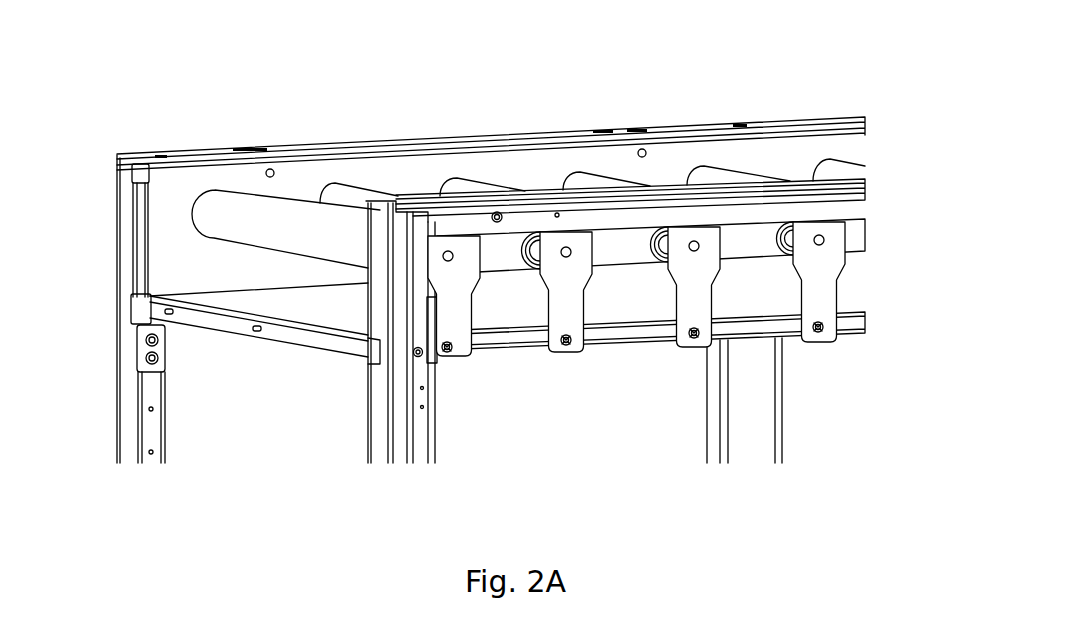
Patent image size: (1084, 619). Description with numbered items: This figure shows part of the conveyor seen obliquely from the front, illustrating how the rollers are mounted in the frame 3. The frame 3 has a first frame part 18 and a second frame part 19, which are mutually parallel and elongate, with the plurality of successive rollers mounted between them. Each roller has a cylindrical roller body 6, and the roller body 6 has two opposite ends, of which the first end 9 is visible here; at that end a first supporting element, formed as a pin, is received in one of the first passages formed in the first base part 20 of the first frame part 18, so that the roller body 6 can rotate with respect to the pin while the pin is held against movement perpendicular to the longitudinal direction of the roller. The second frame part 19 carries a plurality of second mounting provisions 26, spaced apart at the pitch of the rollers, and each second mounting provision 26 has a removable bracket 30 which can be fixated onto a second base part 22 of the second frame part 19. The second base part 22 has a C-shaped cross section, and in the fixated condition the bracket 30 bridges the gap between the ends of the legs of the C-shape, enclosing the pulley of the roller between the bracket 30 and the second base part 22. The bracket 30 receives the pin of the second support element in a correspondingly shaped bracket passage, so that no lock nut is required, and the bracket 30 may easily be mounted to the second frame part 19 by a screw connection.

The first frame part 18 is at (158, 112).
The first base part 20 is at (163, 222).
The first end of the roller body 9 is at (236, 176).
The roller body 6 is at (270, 212).
The second base part 22 is at (378, 295).
The frame 3 is at (476, 430).
The second mounting provision 26 is at (603, 318).
The removable bracket 30 is at (567, 312).
The second frame part 19 is at (882, 347).